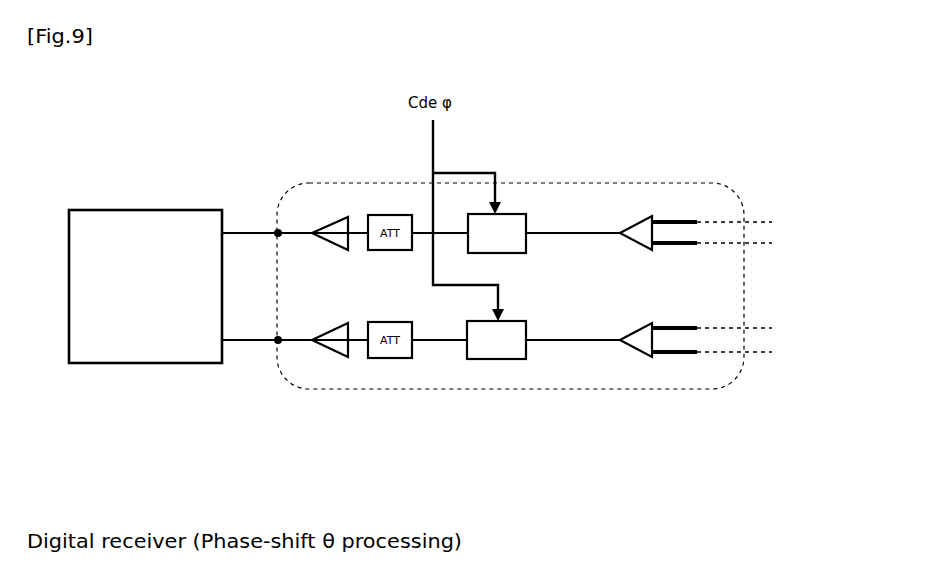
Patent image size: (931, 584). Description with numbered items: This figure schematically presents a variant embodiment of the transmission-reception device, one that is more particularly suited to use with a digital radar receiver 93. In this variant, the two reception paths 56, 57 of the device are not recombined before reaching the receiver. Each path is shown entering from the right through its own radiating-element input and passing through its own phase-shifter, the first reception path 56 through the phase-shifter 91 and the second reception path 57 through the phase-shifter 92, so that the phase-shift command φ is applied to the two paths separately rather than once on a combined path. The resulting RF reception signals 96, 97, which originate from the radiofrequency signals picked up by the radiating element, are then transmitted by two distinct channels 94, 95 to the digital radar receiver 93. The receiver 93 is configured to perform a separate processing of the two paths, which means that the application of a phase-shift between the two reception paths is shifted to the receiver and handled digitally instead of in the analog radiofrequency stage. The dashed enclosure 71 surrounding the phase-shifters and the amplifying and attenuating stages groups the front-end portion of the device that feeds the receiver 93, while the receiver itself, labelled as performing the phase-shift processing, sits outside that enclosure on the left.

The reception path 56 is at (649, 196).
The reception path 57 is at (649, 366).
The analog reception circuit 71 is at (510, 335).
The phase-shifter 91 is at (525, 261).
The phase-shifter 92 is at (491, 373).
The digital radar receiver 93 is at (145, 323).
The distinct channel 94 is at (301, 263).
The distinct channel 95 is at (258, 377).
The RF reception signal 96 is at (295, 194).
The RF reception signal 97 is at (295, 307).